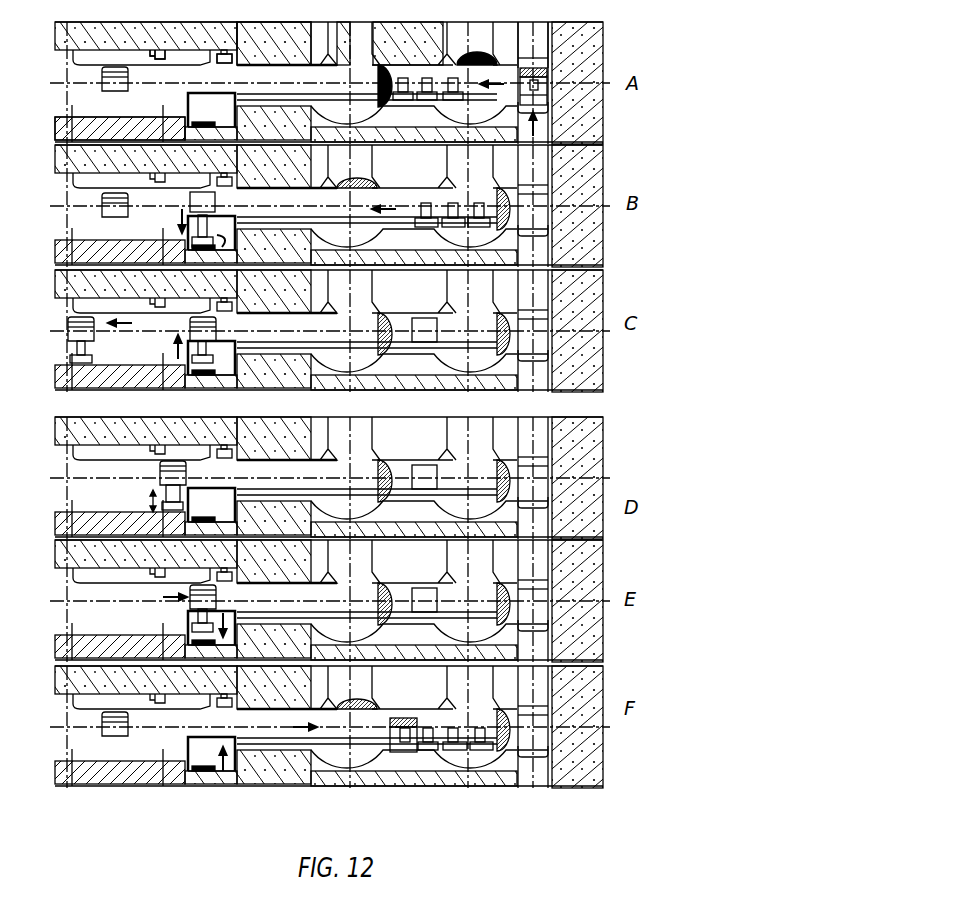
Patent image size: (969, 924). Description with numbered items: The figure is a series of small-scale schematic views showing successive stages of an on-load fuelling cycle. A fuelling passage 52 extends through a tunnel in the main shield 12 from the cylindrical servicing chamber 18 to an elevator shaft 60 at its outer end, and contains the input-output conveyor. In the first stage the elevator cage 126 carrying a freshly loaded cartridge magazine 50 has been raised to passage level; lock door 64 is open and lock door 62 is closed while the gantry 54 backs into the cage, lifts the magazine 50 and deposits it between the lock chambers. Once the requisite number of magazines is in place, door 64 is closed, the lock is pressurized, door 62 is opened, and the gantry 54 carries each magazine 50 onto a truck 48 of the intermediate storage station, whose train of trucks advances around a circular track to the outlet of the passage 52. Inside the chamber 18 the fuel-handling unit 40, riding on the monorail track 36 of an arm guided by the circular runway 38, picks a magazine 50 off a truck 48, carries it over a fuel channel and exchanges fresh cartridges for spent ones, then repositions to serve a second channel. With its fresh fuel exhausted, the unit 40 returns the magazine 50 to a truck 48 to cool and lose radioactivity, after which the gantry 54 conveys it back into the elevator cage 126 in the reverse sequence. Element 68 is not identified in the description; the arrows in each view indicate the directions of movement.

The shield 12 is at (266, 30).
The servicing chamber 18 is at (156, 87).
The monorail track 36 is at (150, 36).
The circular runway 38 is at (165, 37).
The fuel-handling unit 40 is at (112, 68).
The truck 48 is at (211, 636).
The cartridge magazine 50 is at (452, 66).
The fuelling passage 52 is at (425, 78).
The gantry 54 is at (549, 82).
The elevator shaft 60 is at (538, 24).
The lock door 62 is at (386, 40).
The lock door 64 is at (462, 33).
The upper wall block 68 is at (412, 40).
The elevator cage 126 is at (543, 36).